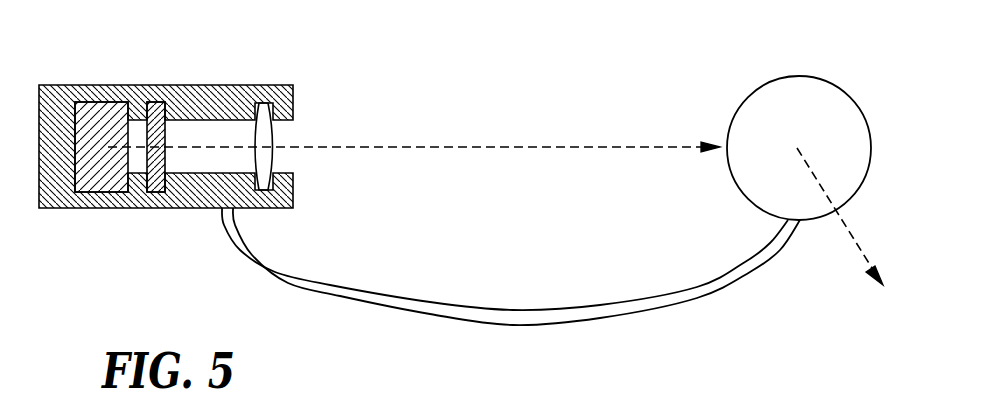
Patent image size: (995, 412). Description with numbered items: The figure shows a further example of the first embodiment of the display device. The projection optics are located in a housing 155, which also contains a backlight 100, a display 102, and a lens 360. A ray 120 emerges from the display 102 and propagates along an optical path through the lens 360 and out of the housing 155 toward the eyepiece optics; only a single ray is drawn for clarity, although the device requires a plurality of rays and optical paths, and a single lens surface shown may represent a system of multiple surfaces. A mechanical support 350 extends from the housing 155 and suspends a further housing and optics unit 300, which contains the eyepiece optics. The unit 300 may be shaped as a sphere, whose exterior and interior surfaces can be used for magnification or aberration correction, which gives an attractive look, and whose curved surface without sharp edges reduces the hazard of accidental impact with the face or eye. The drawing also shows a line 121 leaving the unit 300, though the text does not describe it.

The backlight 100 is at (100, 113).
The display 102 is at (156, 110).
The ray 120 is at (414, 136).
The reflected beam 121 is at (858, 244).
The housing 155 is at (80, 208).
The housing and optics unit 300 is at (745, 101).
The mechanical support 350 is at (386, 302).
The lens 360 is at (274, 135).